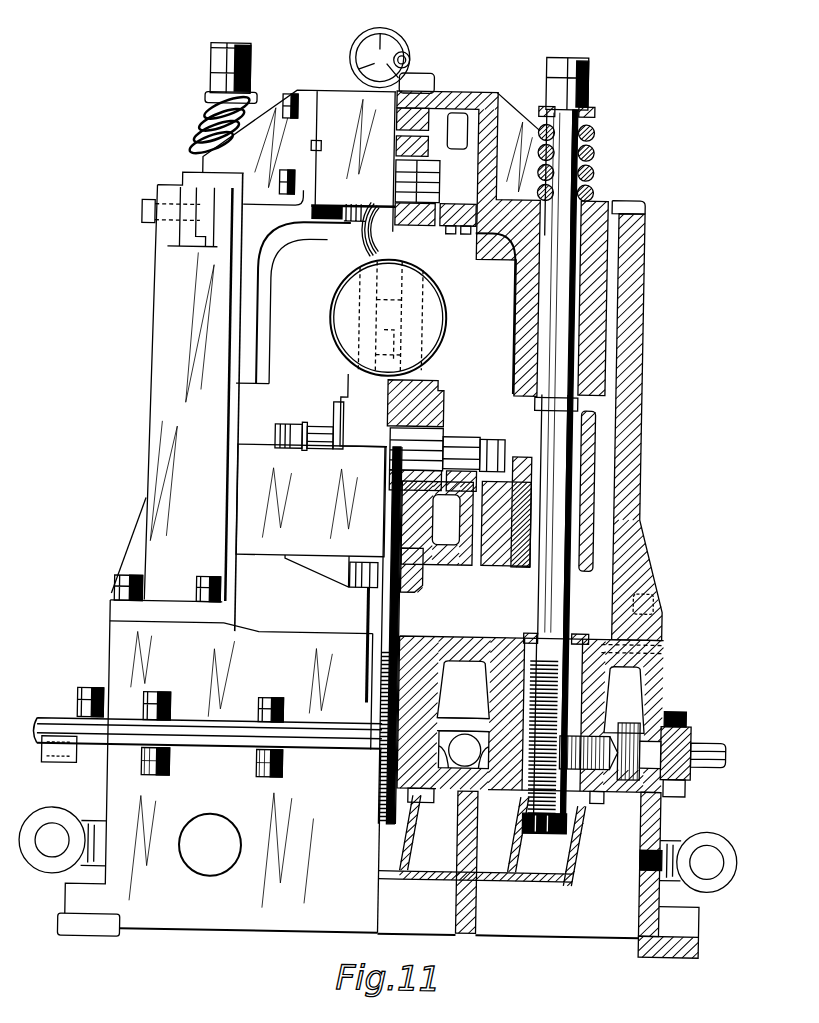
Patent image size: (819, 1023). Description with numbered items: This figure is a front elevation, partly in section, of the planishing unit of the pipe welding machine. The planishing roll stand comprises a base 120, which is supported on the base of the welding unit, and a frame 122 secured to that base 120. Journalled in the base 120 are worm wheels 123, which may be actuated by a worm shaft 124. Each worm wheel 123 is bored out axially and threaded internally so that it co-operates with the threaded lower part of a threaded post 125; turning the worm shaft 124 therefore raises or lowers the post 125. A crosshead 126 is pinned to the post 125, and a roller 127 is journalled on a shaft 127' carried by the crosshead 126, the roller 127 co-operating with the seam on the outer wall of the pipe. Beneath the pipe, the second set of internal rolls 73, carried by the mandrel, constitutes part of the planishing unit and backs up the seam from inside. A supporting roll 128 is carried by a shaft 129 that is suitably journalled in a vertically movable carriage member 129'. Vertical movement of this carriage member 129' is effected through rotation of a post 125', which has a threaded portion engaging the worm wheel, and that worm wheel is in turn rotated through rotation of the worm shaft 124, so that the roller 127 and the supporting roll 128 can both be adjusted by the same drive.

The base 120 is at (218, 913).
The frame 122 is at (172, 461).
The worm wheel 123 is at (622, 726).
The worm shaft 124 is at (704, 746).
The threaded post 125 is at (378, 437).
The post 125' is at (417, 636).
The crosshead 126 is at (511, 128).
The roller 127 is at (368, 217).
The shaft 127' is at (467, 229).
The supporting roll 128 is at (437, 388).
The shaft 129 is at (390, 432).
The carriage member 129' is at (534, 502).
The internal rolls 73 is at (432, 312).